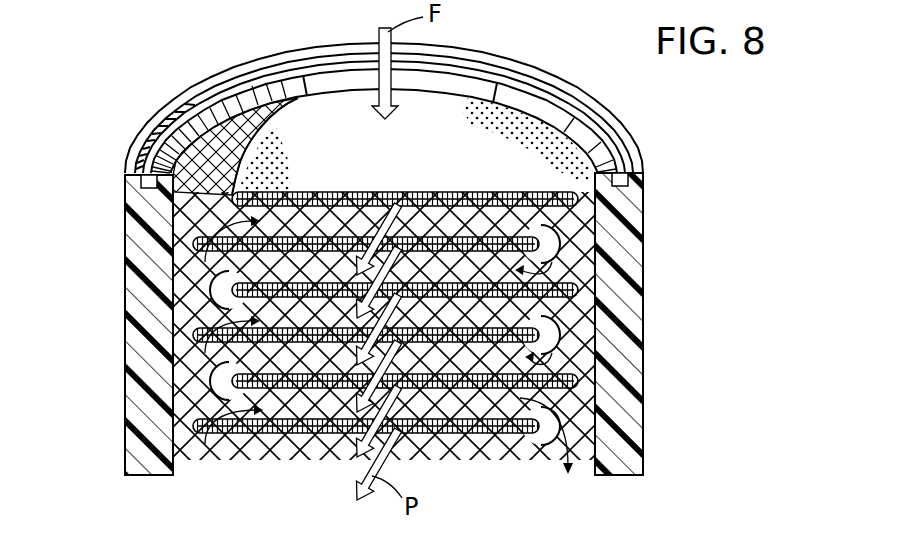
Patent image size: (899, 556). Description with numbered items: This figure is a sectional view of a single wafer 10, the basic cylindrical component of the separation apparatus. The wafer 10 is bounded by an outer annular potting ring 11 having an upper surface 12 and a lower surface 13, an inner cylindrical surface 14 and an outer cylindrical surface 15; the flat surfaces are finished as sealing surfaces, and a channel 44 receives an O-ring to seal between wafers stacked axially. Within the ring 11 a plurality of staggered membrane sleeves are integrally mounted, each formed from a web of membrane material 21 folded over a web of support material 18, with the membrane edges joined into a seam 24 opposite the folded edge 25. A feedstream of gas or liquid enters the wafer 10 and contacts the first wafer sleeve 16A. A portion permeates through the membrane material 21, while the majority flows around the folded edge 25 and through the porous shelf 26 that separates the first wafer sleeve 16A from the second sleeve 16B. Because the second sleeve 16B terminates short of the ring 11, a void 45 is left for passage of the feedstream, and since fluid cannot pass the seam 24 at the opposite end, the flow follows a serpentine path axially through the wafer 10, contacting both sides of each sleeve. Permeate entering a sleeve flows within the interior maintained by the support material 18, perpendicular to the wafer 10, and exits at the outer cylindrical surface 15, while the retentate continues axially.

The wafer 10 is at (662, 150).
The potting ring 11 is at (654, 199).
The upper surface 12 is at (150, 125).
The lower surface 13 is at (133, 476).
The inner cylindrical surface 14 is at (218, 124).
The outer cylindrical surface 15 is at (645, 391).
The first wafer sleeve 16A is at (530, 186).
The second sleeve 16B is at (597, 205).
The support material 18 is at (215, 434).
The membrane material 21 is at (480, 106).
The seam 24 is at (127, 262).
The folded edge 25 is at (540, 427).
The porous shelf 26 is at (583, 353).
The channel 44 is at (147, 170).
The void 45 is at (190, 288).